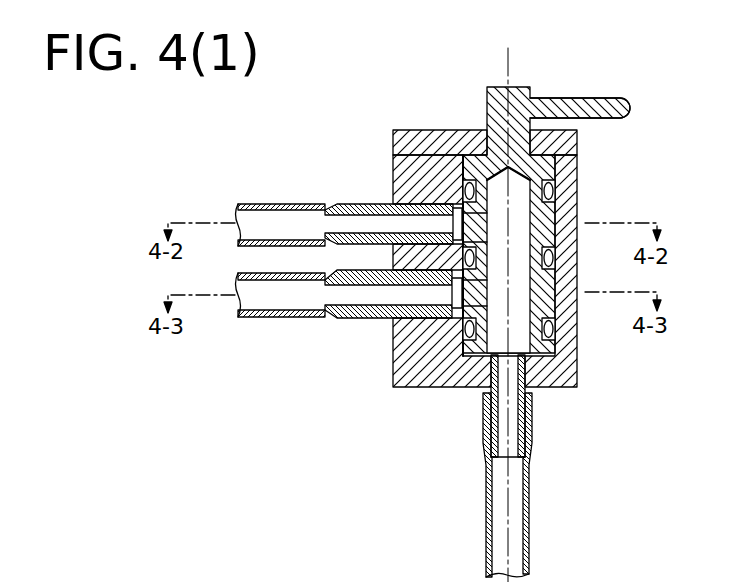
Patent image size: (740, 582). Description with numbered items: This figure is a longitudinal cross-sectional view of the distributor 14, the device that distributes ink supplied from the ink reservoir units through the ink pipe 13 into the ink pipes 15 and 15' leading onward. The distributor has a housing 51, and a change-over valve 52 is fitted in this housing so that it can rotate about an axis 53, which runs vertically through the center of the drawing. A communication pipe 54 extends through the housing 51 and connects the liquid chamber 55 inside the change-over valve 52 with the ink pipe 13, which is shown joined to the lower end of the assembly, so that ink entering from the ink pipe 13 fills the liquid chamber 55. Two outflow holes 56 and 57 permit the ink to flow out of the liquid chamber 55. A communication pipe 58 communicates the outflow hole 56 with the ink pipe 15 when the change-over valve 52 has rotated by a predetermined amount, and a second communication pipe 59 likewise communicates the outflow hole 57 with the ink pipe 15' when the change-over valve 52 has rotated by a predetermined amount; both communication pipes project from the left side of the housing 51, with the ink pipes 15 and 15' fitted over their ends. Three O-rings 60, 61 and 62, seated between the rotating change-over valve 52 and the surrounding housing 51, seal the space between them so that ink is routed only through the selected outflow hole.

The ink pipe 13 is at (528, 502).
The distributor 14 is at (440, 75).
The ink pipe 15 is at (281, 197).
The ink pipe 15' is at (275, 325).
The housing 51 is at (433, 373).
The change-over valve 52 is at (518, 102).
The axis 53 is at (512, 60).
The communication pipe 54 is at (526, 410).
The liquid chamber 55 is at (520, 218).
The outflow hole 56 is at (455, 222).
The outflow hole 57 is at (455, 294).
The communication pipe 58 is at (338, 206).
The communication pipe 59 is at (336, 318).
The O-ring 60 is at (550, 192).
The O-ring 61 is at (549, 258).
The O-ring 62 is at (549, 330).